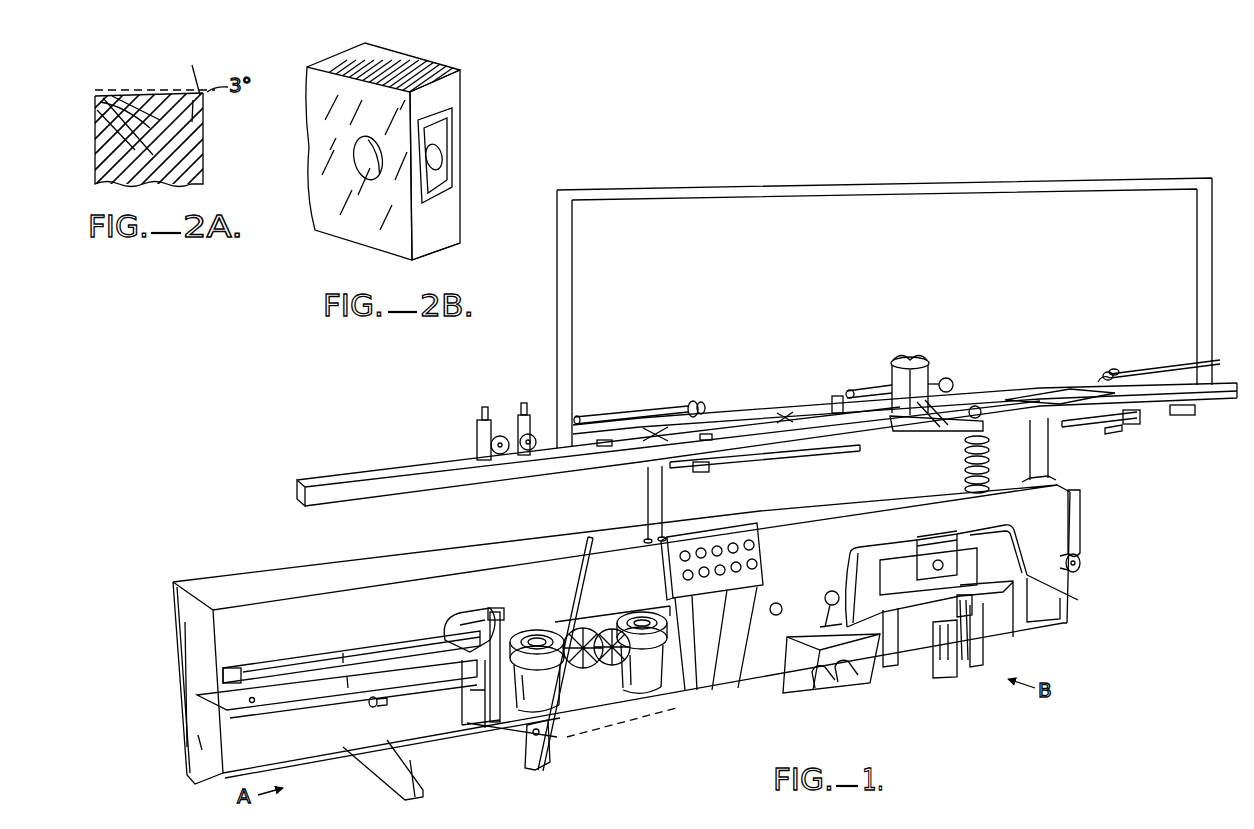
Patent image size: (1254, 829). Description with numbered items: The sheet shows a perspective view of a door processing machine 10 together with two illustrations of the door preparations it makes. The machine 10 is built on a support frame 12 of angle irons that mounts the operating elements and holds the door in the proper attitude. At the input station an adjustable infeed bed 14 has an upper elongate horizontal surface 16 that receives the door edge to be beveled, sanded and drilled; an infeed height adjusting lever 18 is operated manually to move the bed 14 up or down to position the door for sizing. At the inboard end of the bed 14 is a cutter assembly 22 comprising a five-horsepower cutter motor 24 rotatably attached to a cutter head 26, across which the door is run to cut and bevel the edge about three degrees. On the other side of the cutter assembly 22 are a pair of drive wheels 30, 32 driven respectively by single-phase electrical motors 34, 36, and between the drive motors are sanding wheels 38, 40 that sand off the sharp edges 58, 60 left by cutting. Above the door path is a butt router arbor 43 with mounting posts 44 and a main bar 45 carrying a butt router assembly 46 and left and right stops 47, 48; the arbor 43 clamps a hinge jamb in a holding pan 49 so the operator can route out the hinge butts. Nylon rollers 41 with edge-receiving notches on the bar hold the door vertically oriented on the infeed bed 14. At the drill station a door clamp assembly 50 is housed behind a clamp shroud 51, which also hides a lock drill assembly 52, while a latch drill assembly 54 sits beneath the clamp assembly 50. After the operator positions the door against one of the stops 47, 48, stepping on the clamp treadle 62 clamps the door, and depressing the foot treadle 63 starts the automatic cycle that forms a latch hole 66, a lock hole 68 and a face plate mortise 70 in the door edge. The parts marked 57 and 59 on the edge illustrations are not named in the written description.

In FIG. 1, the door processing machine 10 is at (960, 145).
In FIG. 1, the support frame 12 is at (240, 574).
In FIG. 1, the adjustable infeed bed 14 is at (222, 714).
In FIG. 1, the upper elongate horizontal surface 16 is at (222, 686).
In FIG. 1, the infeed height adjusting lever 18 is at (564, 678).
In FIG. 1, the cutter assembly 22 is at (478, 735).
In FIG. 1, the cutter motor 24 is at (468, 624).
In FIG. 1, the cutter head 26 is at (494, 612).
In FIG. 1, the drive wheel 30 is at (538, 630).
In FIG. 1, the drive wheel 32 is at (673, 622).
In FIG. 1, the single-phase electrical motor 34 is at (553, 744).
In FIG. 1, the single-phase electrical motor 36 is at (660, 699).
In FIG. 1, the sanding wheel 38 is at (590, 607).
In FIG. 1, the sanding wheel 40 is at (622, 614).
In FIG. 1, the nylon rollers 41 is at (530, 460).
In FIG. 1, the butt router arbor 43 is at (404, 467).
In FIG. 1, the mounting posts 44 is at (650, 500).
In FIG. 1, the main bar 45 is at (782, 440).
In FIG. 1, the butt router assembly 46 is at (930, 366).
In FIG. 1, the left stop 47 is at (712, 472).
In FIG. 1, the right stop 48 is at (1112, 433).
In FIG. 1, the holding pan 49 is at (757, 420).
In FIG. 1, the door clamp assembly 50 is at (848, 557).
In FIG. 1, the clamp shroud 51 is at (1031, 579).
In FIG. 1, the lock drill assembly 52 is at (932, 537).
In FIG. 1, the latch drill assembly 54 is at (973, 652).
In FIG. 2A, the ski 57 is at (97, 97).
In FIG. 2B, the ski 57 is at (471, 84).
In FIG. 2A, the sharp edge 58 is at (149, 94).
In FIG. 2B, the sharp edge 58 is at (412, 257).
In FIG. 2B, the bottom surface 59 is at (456, 244).
In FIG. 2A, the sharp edge 60 is at (205, 96).
In FIG. 2B, the sharp edge 60 is at (462, 222).
In FIG. 1, the clamp treadle 62 is at (832, 688).
In FIG. 1, the foot treadle 63 is at (858, 680).
In FIG. 2B, the latch hole 66 is at (362, 160).
In FIG. 2B, the lock hole 68 is at (437, 155).
In FIG. 2B, the face plate mortise 70 is at (447, 183).